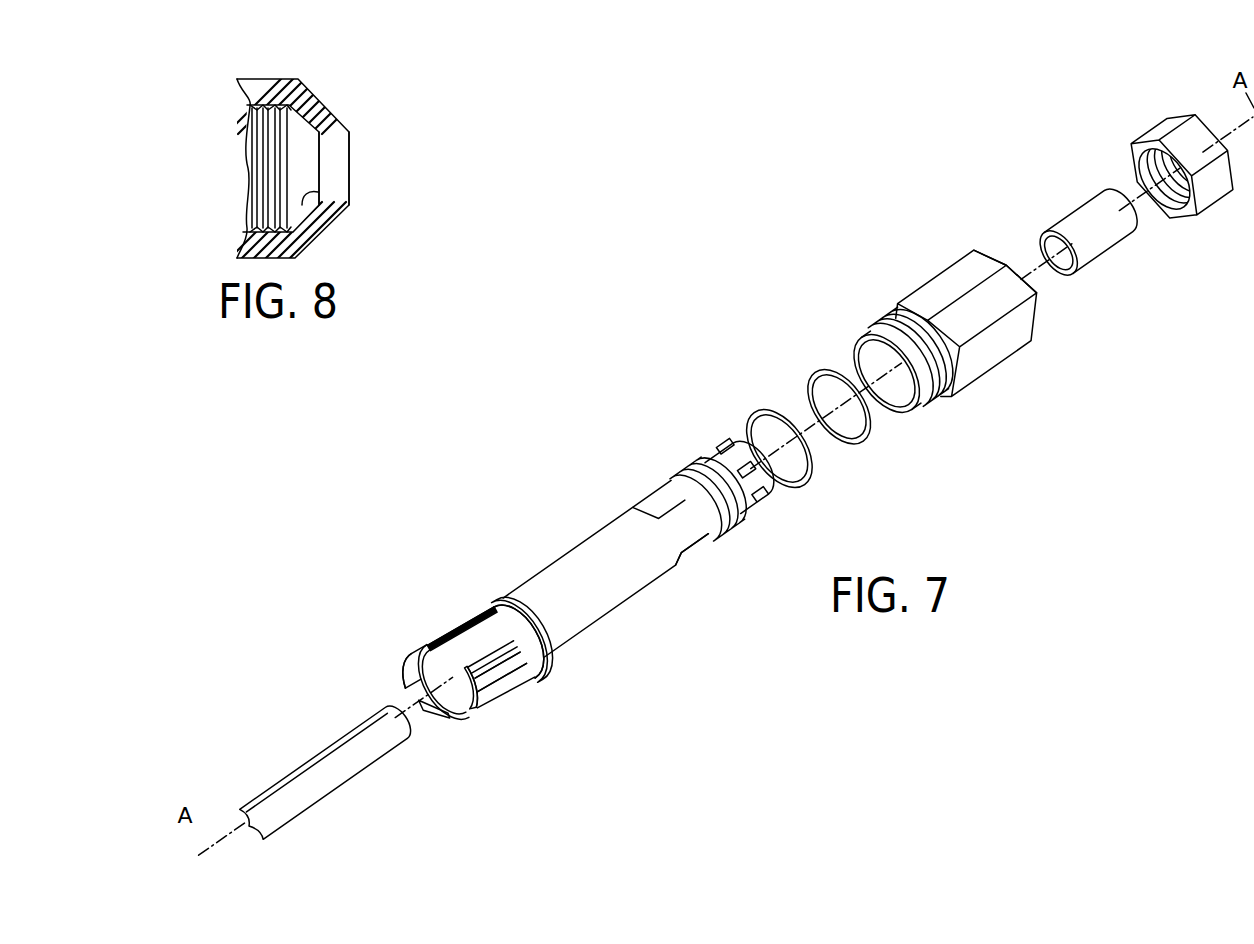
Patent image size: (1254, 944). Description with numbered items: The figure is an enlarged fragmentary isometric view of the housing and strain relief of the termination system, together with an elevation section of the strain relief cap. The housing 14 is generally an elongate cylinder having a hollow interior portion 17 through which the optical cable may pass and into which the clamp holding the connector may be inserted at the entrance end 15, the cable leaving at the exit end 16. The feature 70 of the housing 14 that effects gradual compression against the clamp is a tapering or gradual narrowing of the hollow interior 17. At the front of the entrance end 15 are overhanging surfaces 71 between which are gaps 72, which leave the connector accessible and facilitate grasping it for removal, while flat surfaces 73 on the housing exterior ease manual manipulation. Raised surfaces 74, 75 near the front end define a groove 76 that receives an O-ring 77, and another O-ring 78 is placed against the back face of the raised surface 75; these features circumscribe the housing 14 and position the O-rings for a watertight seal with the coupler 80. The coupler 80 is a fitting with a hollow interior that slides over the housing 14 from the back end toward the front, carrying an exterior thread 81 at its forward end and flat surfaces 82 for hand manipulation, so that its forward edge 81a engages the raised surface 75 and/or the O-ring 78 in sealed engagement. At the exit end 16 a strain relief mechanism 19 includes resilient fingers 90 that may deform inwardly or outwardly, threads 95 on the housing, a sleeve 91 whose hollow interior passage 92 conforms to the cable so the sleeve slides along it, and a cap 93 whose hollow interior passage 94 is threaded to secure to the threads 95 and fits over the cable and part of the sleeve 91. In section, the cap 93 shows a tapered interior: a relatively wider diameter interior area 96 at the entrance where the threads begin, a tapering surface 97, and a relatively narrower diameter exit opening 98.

In FIG. 7, the housing 14 is at (612, 520).
In FIG. 7, the entrance end 15 is at (378, 674).
In FIG. 7, the exit end 16 is at (732, 423).
In FIG. 7, the hollow interior portion 17 is at (432, 738).
In FIG. 7, the strain relief mechanism 19 is at (795, 358).
In FIG. 7, the feature 70 is at (418, 688).
In FIG. 7, the overhanging surfaces 71 is at (414, 652).
In FIG. 7, the gaps 72 is at (410, 668).
In FIG. 7, the flat surfaces 73 is at (513, 664).
In FIG. 7, the raised surface 74 is at (532, 650).
In FIG. 7, the raised surface 75 is at (552, 614).
In FIG. 7, the groove 76 is at (532, 600).
In FIG. 7, the O-ring 77 is at (797, 488).
In FIG. 7, the O-ring 78 is at (854, 447).
In FIG. 7, the coupler 80 is at (985, 362).
In FIG. 7, the exterior thread 81 is at (950, 398).
In FIG. 7, the forward edge 81a is at (905, 413).
In FIG. 7, the flat surfaces 82 is at (1021, 296).
In FIG. 7, the fingers 90 is at (718, 457).
In FIG. 7, the sleeve 91 is at (1086, 205).
In FIG. 7, the hollow interior passage 92 is at (1048, 250).
In FIG. 7, the cap 93 is at (1150, 130).
In FIG. 8, the cap 93 is at (354, 92).
In FIG. 8, the hollow interior passage 94 is at (252, 130).
In FIG. 7, the threads 95 is at (687, 470).
In FIG. 8, the wider diameter interior area 96 is at (259, 179).
In FIG. 8, the tapered surface 97 is at (320, 194).
In FIG. 8, the exit opening 98 is at (337, 155).